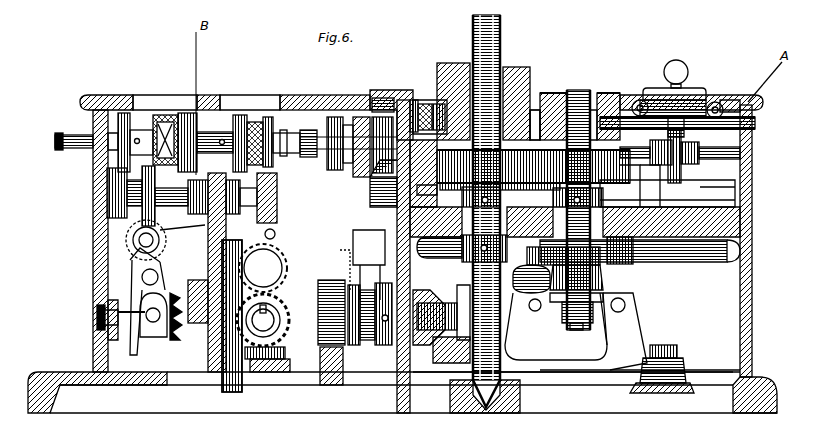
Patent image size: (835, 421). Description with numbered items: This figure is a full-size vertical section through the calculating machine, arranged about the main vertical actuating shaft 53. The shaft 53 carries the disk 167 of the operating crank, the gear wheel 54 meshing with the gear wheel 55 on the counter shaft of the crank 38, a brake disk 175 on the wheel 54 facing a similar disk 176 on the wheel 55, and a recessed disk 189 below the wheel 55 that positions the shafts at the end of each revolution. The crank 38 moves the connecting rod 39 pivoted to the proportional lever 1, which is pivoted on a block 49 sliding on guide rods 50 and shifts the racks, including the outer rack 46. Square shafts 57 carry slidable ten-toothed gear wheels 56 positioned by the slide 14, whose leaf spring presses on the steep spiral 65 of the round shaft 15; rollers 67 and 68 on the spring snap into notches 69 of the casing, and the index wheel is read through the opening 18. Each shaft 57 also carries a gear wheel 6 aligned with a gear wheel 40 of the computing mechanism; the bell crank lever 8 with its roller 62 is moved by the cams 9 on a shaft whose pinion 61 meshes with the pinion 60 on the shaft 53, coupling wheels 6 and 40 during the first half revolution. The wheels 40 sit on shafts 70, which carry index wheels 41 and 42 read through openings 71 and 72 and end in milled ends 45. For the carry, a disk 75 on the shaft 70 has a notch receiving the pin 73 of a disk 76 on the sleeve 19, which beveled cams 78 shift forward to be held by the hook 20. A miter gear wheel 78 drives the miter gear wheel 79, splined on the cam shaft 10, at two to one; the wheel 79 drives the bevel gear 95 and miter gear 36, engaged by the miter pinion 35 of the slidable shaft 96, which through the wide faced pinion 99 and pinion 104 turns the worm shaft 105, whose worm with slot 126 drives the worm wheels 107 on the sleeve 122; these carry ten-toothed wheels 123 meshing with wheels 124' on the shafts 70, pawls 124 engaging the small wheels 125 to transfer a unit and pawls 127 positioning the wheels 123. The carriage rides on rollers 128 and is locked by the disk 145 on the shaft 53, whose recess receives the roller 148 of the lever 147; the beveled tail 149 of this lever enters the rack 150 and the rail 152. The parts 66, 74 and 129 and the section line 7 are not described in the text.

The proportional lever 1 is at (685, 252).
The ten-toothed gear wheel 6 is at (420, 99).
The coupling 7 is at (428, 103).
The bell crank lever 8 is at (370, 232).
The cams 9 is at (372, 346).
The cam shaft 10 is at (263, 320).
The slide 14 is at (690, 98).
The round shaft 15 is at (752, 123).
The openings 18 is at (440, 103).
The sleeve 19 is at (335, 116).
The hook 20 is at (308, 129).
The miter pinion 35 is at (108, 318).
The miter gear wheel 36 is at (168, 335).
The crank 38 is at (630, 287).
The connecting rod 39 is at (595, 265).
The gear wheel 40 is at (383, 98).
The index wheel 41 is at (270, 116).
The index wheel 42 is at (165, 115).
The milled ends 45 is at (67, 134).
The outer rack 46 is at (677, 200).
The block 49 is at (590, 305).
The guide rods 50 is at (536, 311).
The main vertical actuating shaft 53 is at (500, 46).
The gear wheel 54 is at (560, 95).
The gear wheel 55 is at (597, 100).
The ten-toothed gear wheel 56 is at (681, 160).
The square shafts 57 is at (730, 153).
The pinion 60 is at (538, 365).
The pinion 61 is at (455, 355).
The roller 62 is at (460, 290).
The steep spiral 65 is at (651, 152).
The knob 66 is at (672, 110).
The rollers 67 is at (735, 100).
The roller 68 is at (638, 99).
The notches 69 is at (718, 101).
The shafts 70 is at (92, 146).
The openings 71 is at (243, 114).
The openings 72 is at (188, 113).
The pin 73 is at (370, 185).
The frame 74 is at (398, 190).
The disk 75 is at (360, 110).
The disk 76 is at (382, 116).
The miter gear wheel 78 is at (272, 373).
The miter gear wheel 79 is at (262, 360).
The bevel gear wheel 95 is at (228, 370).
The shaft 96 is at (140, 313).
The wide faced pinion 99 is at (142, 277).
The pinion 104 is at (157, 232).
The worm shaft 105 is at (139, 242).
The worm wheel 107 is at (142, 213).
The sleeve 122 is at (127, 194).
The ten-toothed gear wheel 123 is at (202, 301).
The pawl 124 is at (79, 193).
The ten-toothed wheel 124' is at (177, 108).
The small toothed wheel 125 is at (155, 142).
The slot 126 is at (160, 230).
The pawl 127 is at (132, 258).
The rollers 128 is at (97, 312).
The bearing 129 is at (414, 99).
The disk 145 is at (470, 240).
The lever 147 is at (440, 187).
The roller 148 is at (437, 160).
The beveled tail 149 is at (331, 332).
The rack 150 is at (263, 268).
The rail 152 is at (265, 234).
The disk 167 is at (535, 110).
The brake disk 175 is at (545, 92).
The brake disk 176 is at (600, 92).
The disk 189 is at (620, 230).